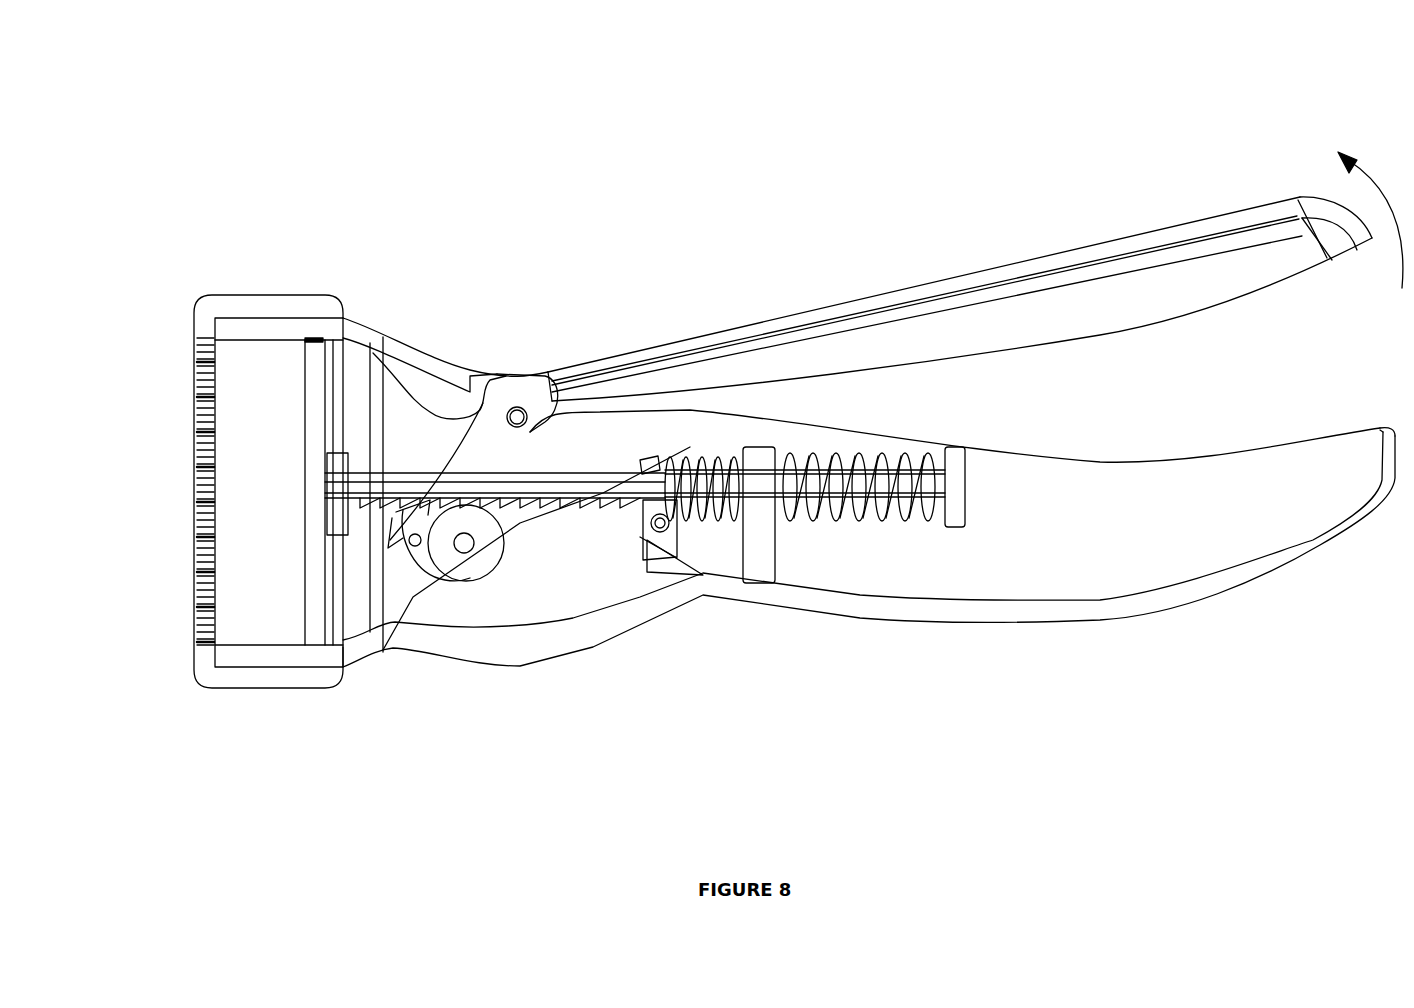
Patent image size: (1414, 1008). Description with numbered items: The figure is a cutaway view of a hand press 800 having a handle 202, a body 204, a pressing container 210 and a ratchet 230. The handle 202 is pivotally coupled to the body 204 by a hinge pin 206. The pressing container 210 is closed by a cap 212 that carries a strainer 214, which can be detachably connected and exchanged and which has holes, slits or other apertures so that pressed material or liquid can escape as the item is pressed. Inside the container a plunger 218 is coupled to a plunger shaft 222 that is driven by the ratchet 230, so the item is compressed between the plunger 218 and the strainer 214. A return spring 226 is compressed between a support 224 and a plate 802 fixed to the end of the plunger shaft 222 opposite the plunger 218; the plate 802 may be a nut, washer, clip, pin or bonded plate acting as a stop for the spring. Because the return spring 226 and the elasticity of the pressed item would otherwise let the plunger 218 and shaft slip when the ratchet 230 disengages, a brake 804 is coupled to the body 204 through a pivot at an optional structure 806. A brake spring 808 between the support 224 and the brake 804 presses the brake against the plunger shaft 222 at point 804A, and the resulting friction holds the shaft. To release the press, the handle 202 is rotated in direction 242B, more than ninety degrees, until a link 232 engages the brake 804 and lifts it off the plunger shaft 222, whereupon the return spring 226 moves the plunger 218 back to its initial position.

The hand press 800 is at (727, 85).
The handle 202 is at (1145, 233).
The body 204 is at (1318, 540).
The hinge pin 206 is at (537, 450).
The pressing container 210 is at (257, 312).
The cap 212 is at (268, 683).
The strainer 214 is at (197, 355).
The plunger 218 is at (325, 612).
The plunger shaft 222 is at (600, 490).
The support 224 is at (766, 577).
The return spring 226 is at (856, 517).
The ratchet 230 is at (450, 560).
The link 232 is at (483, 440).
The direction 242B is at (1340, 206).
The plate 802 is at (953, 503).
The brake 804 is at (650, 513).
The point 804A is at (633, 468).
The structure 806 is at (647, 545).
The brake spring 808 is at (707, 523).